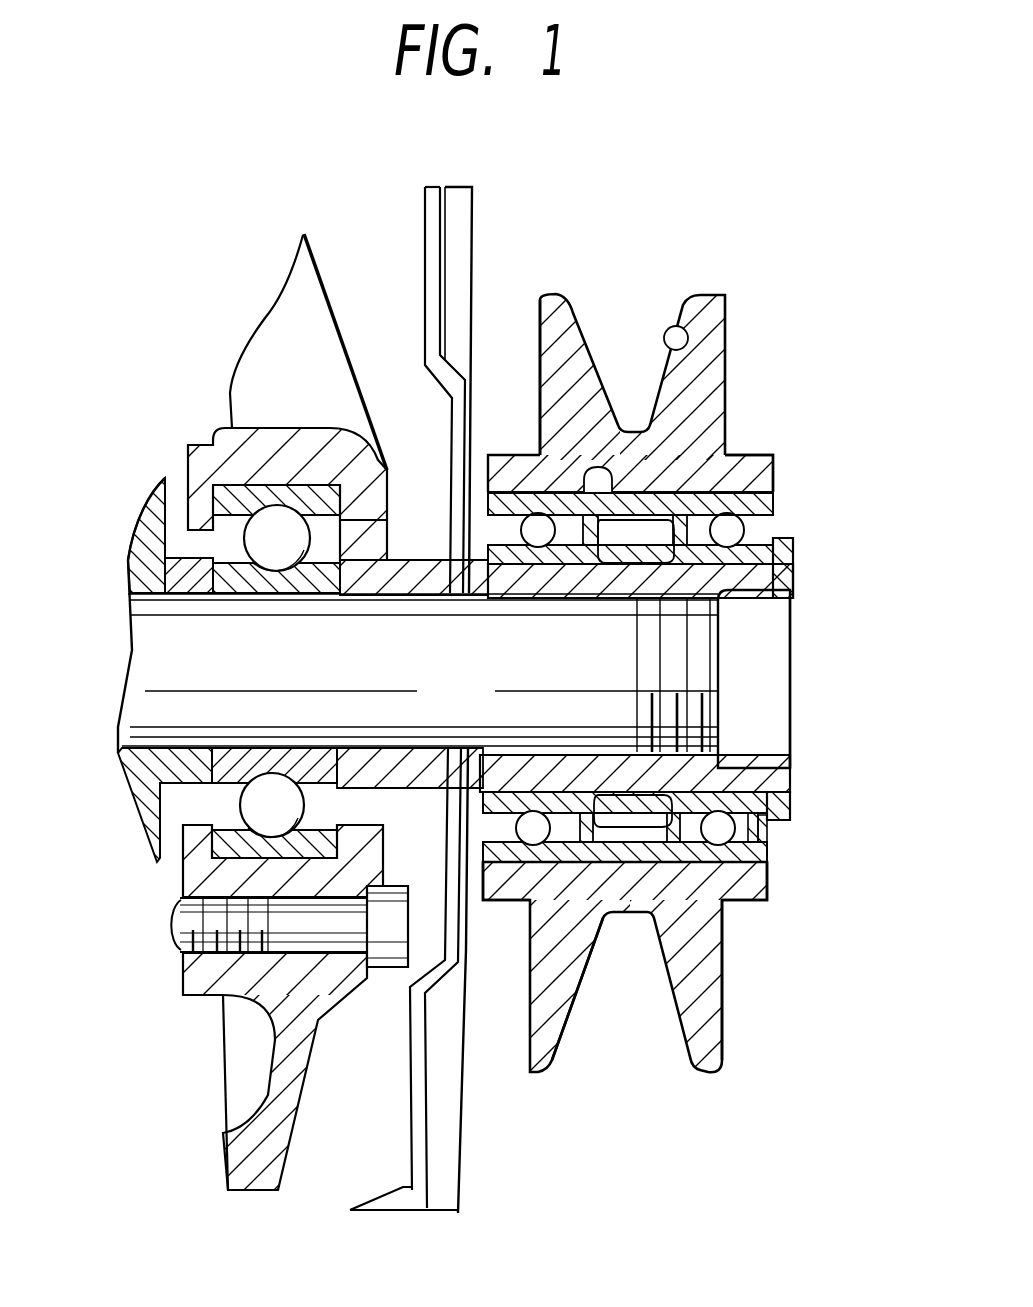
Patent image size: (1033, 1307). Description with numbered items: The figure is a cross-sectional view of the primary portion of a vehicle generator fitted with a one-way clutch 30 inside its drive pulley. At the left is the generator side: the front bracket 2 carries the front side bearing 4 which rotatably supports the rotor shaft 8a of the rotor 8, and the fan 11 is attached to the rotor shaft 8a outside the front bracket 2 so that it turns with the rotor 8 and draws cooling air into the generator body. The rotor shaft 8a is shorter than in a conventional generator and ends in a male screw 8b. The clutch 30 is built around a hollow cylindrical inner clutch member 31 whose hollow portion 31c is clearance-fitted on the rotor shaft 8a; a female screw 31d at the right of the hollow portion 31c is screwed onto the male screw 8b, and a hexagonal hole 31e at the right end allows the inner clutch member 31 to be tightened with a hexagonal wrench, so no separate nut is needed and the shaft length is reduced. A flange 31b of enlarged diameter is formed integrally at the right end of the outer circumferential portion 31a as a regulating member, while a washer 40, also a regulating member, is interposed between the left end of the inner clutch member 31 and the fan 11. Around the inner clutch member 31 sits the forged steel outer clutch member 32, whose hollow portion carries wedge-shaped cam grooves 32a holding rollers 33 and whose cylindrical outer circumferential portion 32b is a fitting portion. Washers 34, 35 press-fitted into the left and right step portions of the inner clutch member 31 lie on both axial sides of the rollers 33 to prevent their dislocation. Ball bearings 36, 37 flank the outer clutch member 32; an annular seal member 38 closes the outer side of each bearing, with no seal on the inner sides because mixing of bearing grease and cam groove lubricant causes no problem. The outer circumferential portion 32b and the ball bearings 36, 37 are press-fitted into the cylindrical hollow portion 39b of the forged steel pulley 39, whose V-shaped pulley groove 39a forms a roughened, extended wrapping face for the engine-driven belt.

The front bracket 2 is at (223, 1060).
The front side bearing 4 is at (190, 884).
The rotor 8 is at (128, 548).
The rotor shaft 8a is at (143, 697).
The male screw 8b is at (700, 665).
The fan 11 is at (408, 1078).
The clutch 30 is at (782, 587).
The inner clutch member 31 is at (790, 558).
The outer circumferential portion 31a is at (622, 530).
The flange 31b is at (790, 537).
The hollow portion 31c is at (770, 835).
The female screw 31d is at (770, 775).
The hexagonal hole 31e is at (782, 765).
The outer clutch member 32 is at (728, 407).
The cam groove 32a is at (728, 445).
The cylindrical outer circumferential portion 32b is at (570, 478).
The roller 33 is at (773, 465).
The washer 34 is at (580, 865).
The washer 35 is at (720, 968).
The ball bearing 36 is at (513, 865).
The ball bearing 37 is at (737, 865).
The annular seal member 38 is at (780, 847).
The pulley 39 is at (722, 300).
The pulley groove 39a is at (687, 350).
The cylindrical hollow portion 39b is at (542, 492).
The washer 40 is at (478, 470).